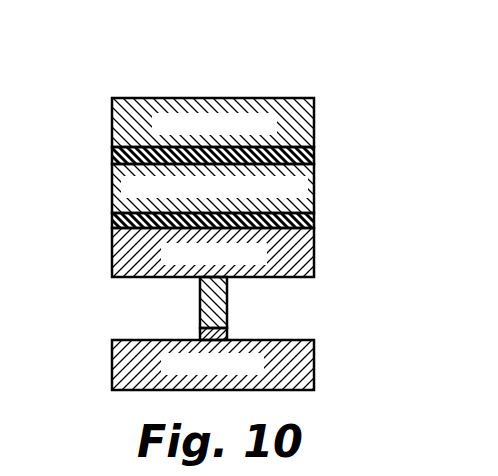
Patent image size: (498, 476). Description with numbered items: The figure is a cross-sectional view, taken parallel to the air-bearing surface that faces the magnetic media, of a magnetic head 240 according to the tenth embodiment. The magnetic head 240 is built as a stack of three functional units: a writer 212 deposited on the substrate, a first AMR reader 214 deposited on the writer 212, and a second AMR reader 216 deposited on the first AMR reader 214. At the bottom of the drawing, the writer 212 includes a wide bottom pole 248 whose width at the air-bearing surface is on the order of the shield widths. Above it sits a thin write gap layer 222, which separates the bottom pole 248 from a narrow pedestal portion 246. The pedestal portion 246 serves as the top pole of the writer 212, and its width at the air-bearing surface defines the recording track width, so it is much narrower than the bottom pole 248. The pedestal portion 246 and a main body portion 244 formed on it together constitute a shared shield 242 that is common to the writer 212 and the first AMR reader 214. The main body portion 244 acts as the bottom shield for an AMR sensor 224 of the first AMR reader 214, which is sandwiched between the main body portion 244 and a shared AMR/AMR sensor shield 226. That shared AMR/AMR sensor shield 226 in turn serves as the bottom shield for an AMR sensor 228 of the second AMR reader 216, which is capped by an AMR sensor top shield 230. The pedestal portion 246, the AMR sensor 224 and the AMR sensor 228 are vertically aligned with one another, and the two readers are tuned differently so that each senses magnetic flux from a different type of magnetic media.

The magnetic head 240 is at (253, 207).
The AMR sensor top shield 230 is at (314, 121).
The AMR sensor 228 is at (292, 157).
The shared AMR/AMR sensor shield 226 is at (314, 196).
The AMR sensor 224 is at (290, 220).
The main body portion 244 is at (297, 278).
The pedestal portion 246 is at (227, 291).
The write gap layer 222 is at (234, 333).
The bottom pole 248 is at (314, 366).
The shared shield 242 is at (364, 230).
The second AMR reader 216 is at (94, 215).
The first AMR reader 214 is at (70, 278).
The writer 212 is at (52, 388).